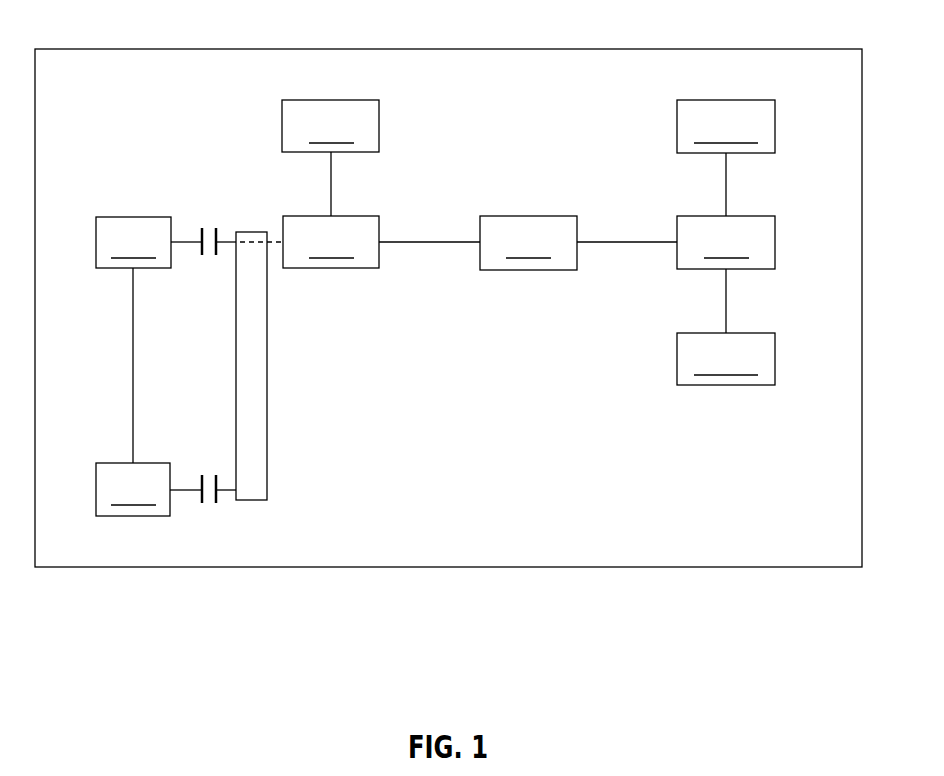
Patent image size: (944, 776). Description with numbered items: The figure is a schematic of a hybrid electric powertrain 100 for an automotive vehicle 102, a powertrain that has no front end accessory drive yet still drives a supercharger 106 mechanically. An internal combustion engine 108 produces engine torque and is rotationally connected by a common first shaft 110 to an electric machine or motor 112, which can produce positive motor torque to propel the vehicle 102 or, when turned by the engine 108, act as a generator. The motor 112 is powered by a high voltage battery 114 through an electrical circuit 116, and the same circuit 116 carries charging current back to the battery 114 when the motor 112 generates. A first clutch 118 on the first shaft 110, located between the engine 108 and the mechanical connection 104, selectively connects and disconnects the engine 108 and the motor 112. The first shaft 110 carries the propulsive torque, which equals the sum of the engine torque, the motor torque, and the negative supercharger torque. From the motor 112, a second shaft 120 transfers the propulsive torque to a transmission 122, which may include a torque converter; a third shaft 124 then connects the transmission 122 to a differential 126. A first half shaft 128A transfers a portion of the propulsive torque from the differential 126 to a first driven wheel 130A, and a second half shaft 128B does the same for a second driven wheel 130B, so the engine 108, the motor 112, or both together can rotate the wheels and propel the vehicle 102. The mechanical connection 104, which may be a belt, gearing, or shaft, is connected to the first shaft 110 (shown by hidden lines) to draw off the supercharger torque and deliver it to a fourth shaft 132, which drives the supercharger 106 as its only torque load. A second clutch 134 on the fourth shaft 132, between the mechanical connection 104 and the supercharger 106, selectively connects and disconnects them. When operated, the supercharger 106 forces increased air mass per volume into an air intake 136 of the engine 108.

The hybrid electric powertrain 100 is at (553, 131).
The automotive vehicle 102 is at (124, 48).
The mechanical connection 104 is at (268, 334).
The supercharger 106 is at (133, 489).
The internal combustion engine 108 is at (133, 242).
The first shaft 110 is at (200, 241).
The electric machine (motor) 112 is at (331, 242).
The high voltage battery 114 is at (330, 126).
The electrical circuit 116 is at (330, 194).
The first clutch 118 is at (200, 254).
The second shaft 120 is at (428, 240).
The transmission 122 is at (528, 243).
The third shaft 124 is at (625, 240).
The differential 126 is at (726, 242).
The first half shaft 128A is at (727, 193).
The second half shaft 128B is at (727, 309).
The first driven wheel 130A is at (726, 126).
The second driven wheel 130B is at (726, 359).
The fourth shaft 132 is at (197, 488).
The second clutch 134 is at (200, 500).
The air intake 136 is at (132, 328).